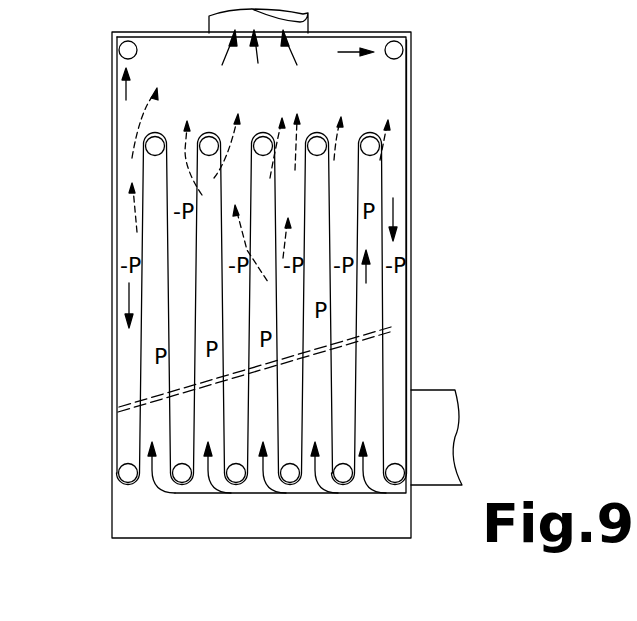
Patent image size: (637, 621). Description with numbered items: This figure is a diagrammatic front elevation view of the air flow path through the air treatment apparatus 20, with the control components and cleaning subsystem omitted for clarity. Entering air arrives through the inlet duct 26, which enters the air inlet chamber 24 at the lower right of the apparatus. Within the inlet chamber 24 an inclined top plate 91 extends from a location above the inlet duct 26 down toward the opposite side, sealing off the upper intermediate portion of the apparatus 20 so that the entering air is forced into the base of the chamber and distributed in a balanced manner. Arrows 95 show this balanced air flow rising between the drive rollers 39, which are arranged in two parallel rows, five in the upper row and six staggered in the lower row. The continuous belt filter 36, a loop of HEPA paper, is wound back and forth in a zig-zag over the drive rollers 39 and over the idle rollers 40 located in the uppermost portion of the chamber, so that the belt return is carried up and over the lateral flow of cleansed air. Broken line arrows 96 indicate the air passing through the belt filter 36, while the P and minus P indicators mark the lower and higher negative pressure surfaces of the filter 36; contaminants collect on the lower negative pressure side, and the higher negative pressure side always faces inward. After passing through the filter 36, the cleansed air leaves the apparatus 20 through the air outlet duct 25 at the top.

The air treatment apparatus 20 is at (486, 110).
The air inlet chamber 24 is at (398, 525).
The air outlet duct 25 is at (310, 25).
The inlet duct 26 is at (448, 408).
The continuous belt filter 36 is at (112, 95).
The drive rollers 39 is at (365, 133).
The idle rollers 40 is at (403, 50).
The top plate 91 is at (362, 337).
The arrows 95 is at (160, 494).
The broken line arrows 96 is at (133, 137).